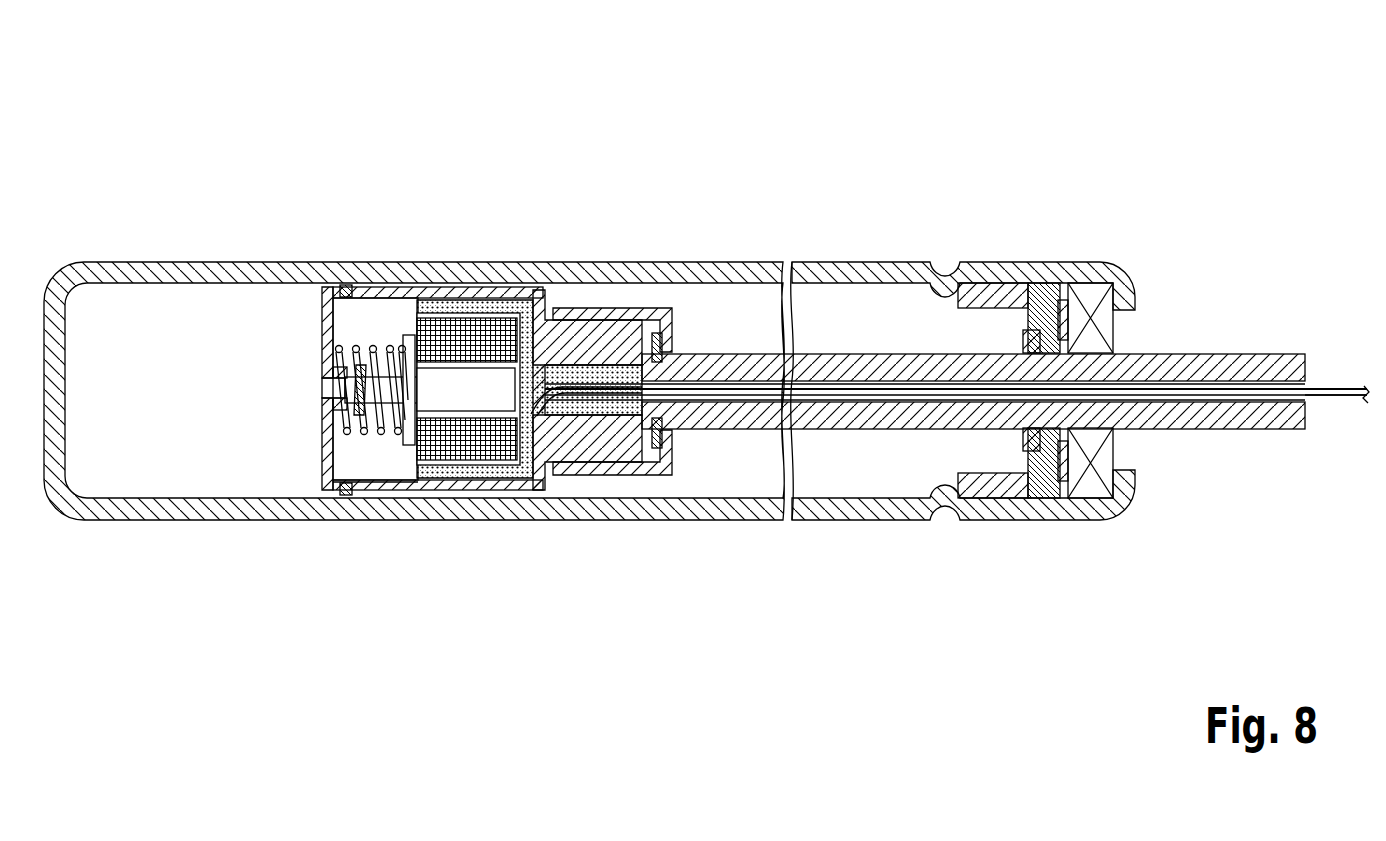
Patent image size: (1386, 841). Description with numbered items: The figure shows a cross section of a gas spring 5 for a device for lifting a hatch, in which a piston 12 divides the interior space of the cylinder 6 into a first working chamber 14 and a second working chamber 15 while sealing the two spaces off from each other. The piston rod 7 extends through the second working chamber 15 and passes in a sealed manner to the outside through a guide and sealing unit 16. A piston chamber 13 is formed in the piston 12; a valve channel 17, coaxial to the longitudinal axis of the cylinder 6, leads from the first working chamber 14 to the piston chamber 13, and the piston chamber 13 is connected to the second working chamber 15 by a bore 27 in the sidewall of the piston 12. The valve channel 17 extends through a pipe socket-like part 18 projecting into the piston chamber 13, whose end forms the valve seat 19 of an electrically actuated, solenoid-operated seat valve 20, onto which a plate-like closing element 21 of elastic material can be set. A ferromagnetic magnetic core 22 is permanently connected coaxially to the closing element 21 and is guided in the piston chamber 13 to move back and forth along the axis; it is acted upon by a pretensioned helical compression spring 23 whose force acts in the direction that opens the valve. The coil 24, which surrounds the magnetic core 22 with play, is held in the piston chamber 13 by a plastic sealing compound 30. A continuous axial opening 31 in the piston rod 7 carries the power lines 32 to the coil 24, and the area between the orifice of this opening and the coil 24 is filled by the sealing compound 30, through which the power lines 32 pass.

The gas spring 5 is at (871, 178).
The cylinder 6 is at (157, 272).
The piston rod 7 is at (1258, 368).
The piston 12 is at (447, 290).
The piston chamber 13 is at (366, 312).
The first working chamber 14 is at (150, 470).
The second working chamber 15 is at (868, 470).
The guide and sealing unit 16 is at (1048, 266).
The valve channel 17 is at (325, 391).
The pipe socket-like part 18 is at (330, 373).
The valve seat 19 is at (330, 413).
The seat valve 20 is at (361, 456).
The closing element 21 is at (362, 366).
The magnetic core 22 is at (499, 384).
The spring 23 is at (322, 298).
The coil 24 is at (452, 450).
The bore 27 is at (392, 490).
The sealing compound 30 is at (520, 490).
The axial opening 31 is at (1178, 386).
The power lines 32 is at (1347, 390).